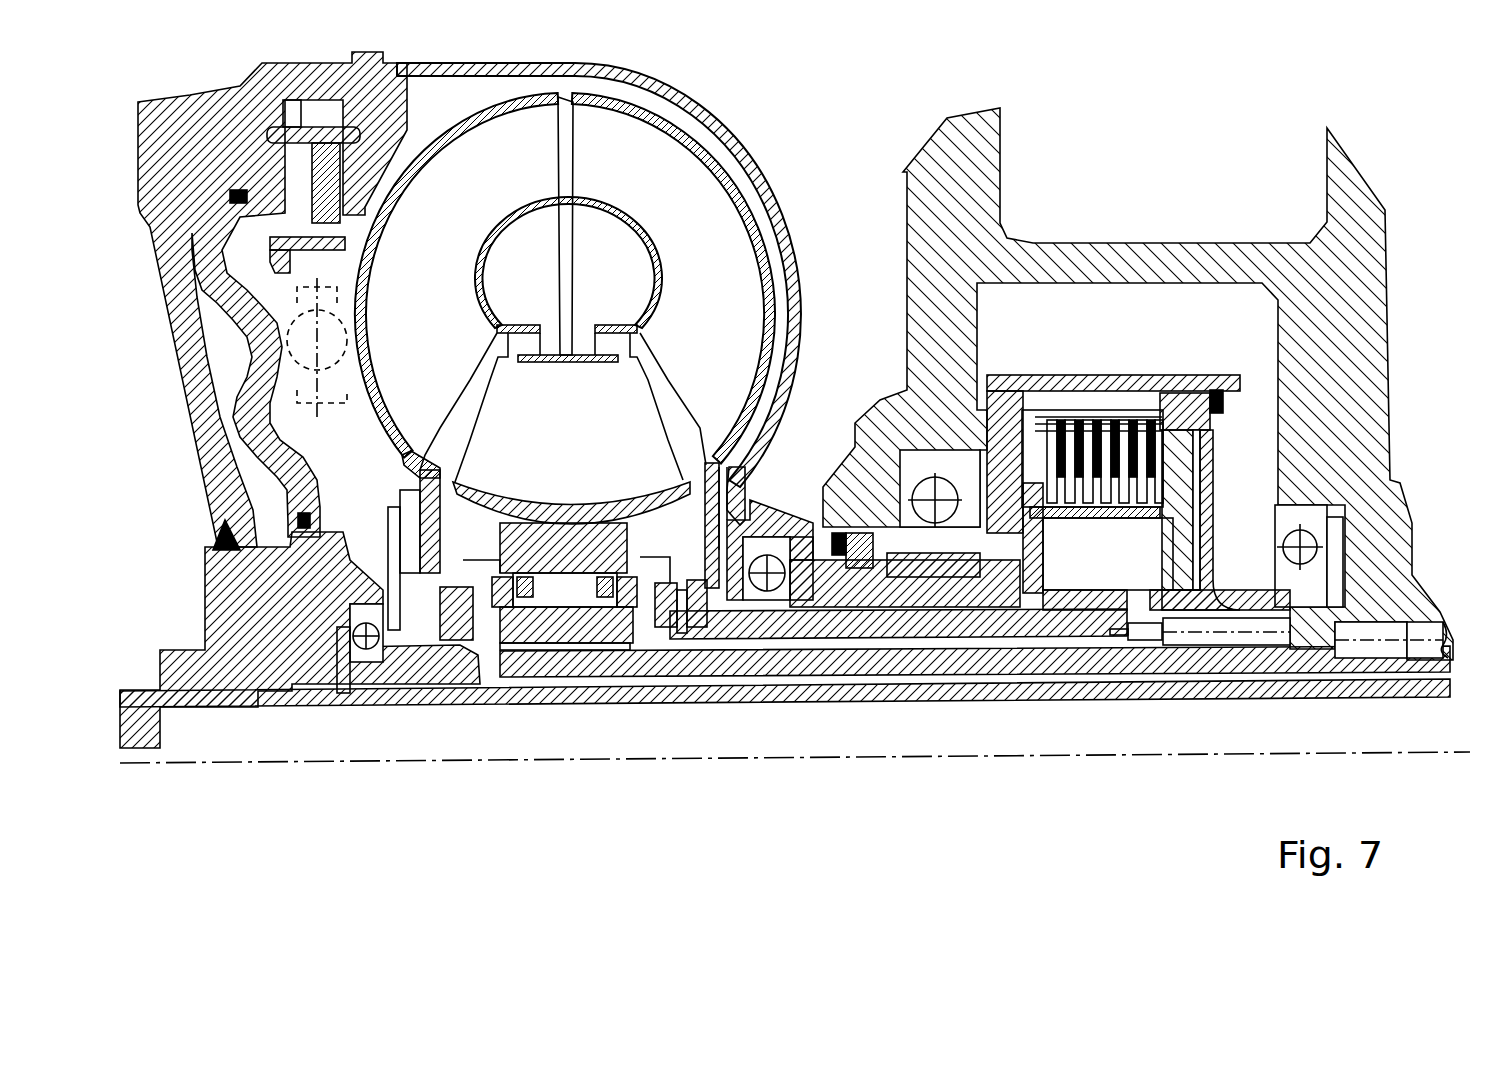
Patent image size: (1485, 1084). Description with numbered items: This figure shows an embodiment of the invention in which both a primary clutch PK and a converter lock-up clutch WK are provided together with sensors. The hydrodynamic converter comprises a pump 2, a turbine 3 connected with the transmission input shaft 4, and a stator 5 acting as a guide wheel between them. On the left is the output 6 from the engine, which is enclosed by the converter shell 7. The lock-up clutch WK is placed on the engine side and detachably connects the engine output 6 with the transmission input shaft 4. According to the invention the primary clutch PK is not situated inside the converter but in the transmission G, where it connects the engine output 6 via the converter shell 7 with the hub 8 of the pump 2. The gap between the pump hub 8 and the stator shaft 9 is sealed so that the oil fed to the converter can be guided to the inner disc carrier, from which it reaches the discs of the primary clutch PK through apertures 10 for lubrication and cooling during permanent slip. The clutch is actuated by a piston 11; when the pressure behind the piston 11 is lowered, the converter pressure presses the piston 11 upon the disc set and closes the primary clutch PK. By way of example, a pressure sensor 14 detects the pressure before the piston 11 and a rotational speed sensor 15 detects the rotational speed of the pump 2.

The pump 2 is at (692, 346).
The turbine 3 is at (456, 361).
The transmission input shaft 4 is at (677, 695).
The stator 5 is at (571, 423).
The output from the engine 6 is at (190, 95).
The converter shell 7 is at (537, 62).
The hub of the pump 8 is at (897, 633).
The stator shaft 9 is at (803, 678).
The apertures 10 is at (1113, 492).
The piston 11 is at (1180, 547).
The pressure sensor 14 is at (1350, 648).
The rotational speed sensor 15 is at (1230, 645).
The lock-up clutch WK is at (322, 117).
The primary clutch PK is at (1105, 412).
The transmission G is at (1390, 368).